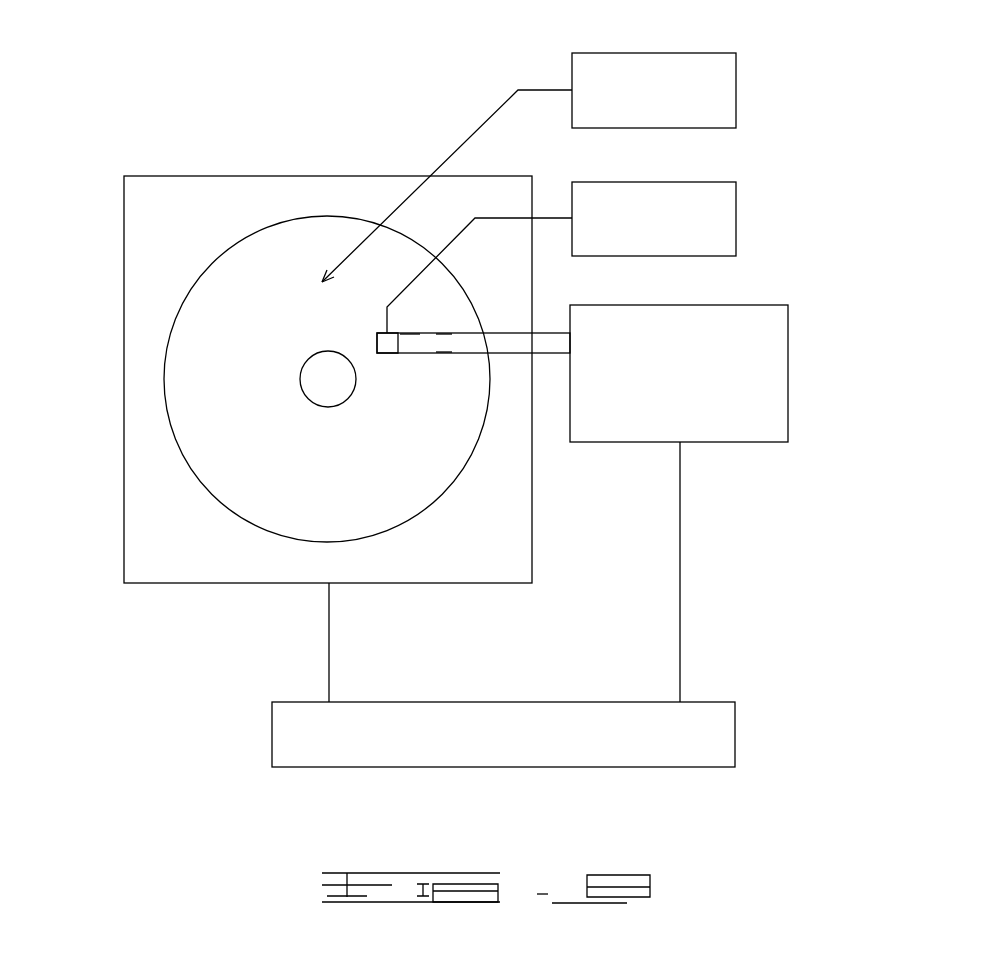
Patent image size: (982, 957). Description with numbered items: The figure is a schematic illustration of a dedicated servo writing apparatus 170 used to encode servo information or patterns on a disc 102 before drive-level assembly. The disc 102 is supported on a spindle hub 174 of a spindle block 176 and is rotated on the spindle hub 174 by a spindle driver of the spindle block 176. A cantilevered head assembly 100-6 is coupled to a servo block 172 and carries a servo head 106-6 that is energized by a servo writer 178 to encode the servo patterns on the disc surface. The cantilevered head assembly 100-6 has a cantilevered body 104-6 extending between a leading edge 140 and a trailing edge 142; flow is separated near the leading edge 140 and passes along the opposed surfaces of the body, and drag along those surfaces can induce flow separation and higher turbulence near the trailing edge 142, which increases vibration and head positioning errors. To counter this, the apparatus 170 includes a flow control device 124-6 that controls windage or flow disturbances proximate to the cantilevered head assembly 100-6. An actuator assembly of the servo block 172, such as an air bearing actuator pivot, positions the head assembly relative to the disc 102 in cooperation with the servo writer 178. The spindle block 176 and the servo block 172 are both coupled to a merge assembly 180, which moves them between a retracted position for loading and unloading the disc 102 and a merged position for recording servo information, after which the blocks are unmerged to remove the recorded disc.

The servo writing apparatus 170 is at (283, 87).
The spindle block 176 is at (163, 177).
The disc 102 is at (253, 258).
The spindle hub 174 is at (300, 380).
The cantilevered head assembly 100-6 is at (497, 328).
The servo head 106-6 is at (377, 343).
The cantilevered body 104-6 is at (410, 337).
The trailing edge 142 is at (443, 333).
The leading edge 140 is at (445, 353).
The flow control device 124-6 is at (738, 73).
The servo writer 178 is at (737, 205).
The servo block 172 is at (749, 305).
The merge assembly 180 is at (272, 733).